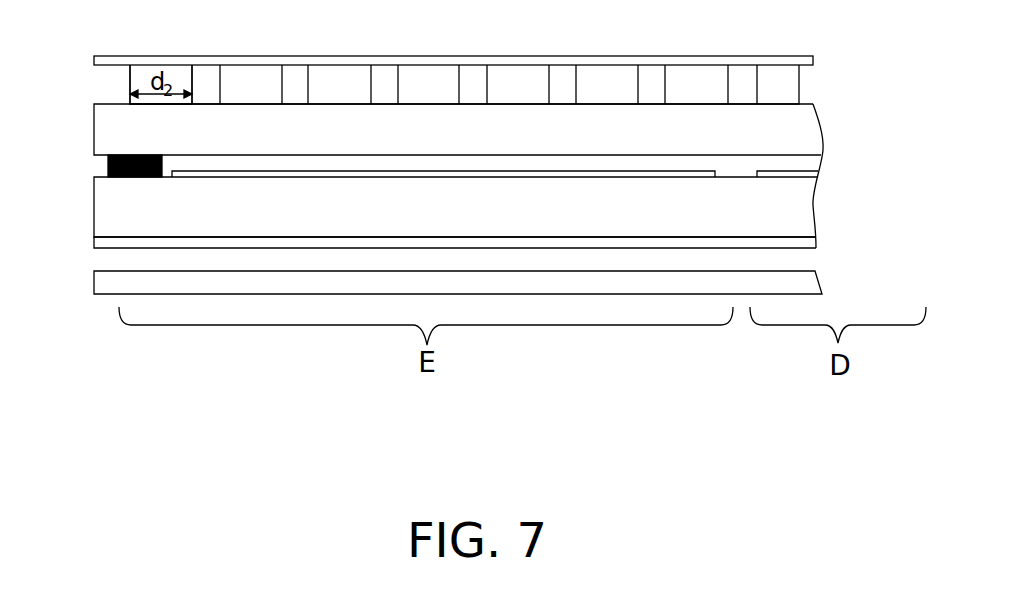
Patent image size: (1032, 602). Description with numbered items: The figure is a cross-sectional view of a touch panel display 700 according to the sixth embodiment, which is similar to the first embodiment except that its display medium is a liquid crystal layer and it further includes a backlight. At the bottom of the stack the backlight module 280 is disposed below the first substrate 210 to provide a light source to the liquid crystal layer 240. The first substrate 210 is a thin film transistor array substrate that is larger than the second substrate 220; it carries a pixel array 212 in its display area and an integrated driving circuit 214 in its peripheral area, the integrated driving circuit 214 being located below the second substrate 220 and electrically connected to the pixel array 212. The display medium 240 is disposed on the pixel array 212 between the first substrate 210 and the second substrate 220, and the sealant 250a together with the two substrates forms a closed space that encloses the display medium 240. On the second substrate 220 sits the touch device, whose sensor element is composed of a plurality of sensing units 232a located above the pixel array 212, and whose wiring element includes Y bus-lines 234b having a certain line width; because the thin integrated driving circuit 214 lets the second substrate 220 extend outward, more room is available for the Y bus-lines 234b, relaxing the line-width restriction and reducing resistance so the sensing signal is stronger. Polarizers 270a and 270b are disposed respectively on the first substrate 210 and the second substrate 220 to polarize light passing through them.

The touch panel display 700 is at (912, 439).
The first substrate 210 is at (806, 210).
The pixel array 212 is at (806, 174).
The integrated driving circuit 214 is at (178, 172).
The second substrate 220 is at (808, 128).
The sensing units 232a is at (790, 85).
The Y bus-lines 234b is at (137, 83).
The display medium 240 is at (812, 163).
The sealant 250a is at (108, 163).
The polarizer 270a is at (790, 240).
The polarizer 270b is at (797, 61).
The backlight module 280 is at (805, 281).